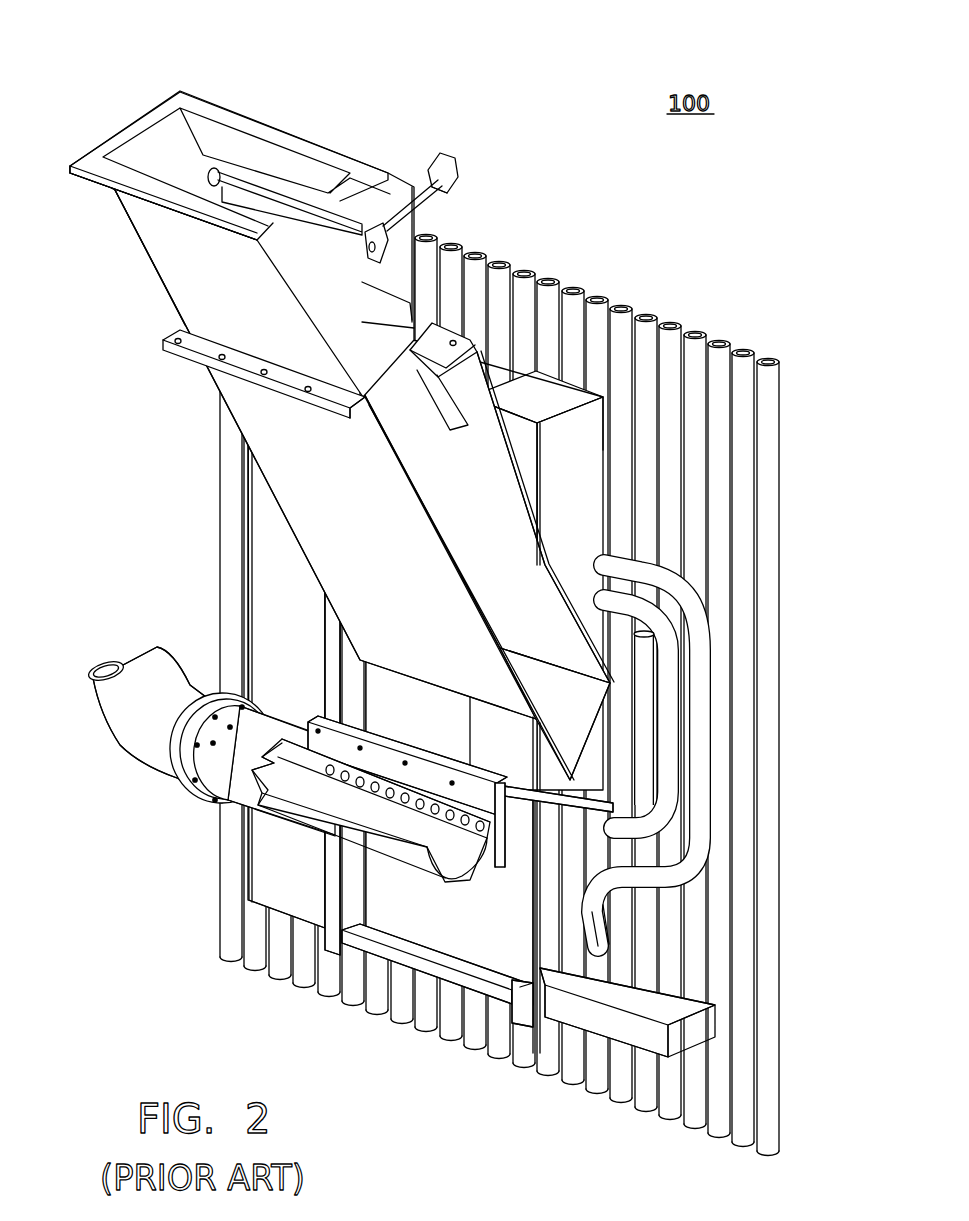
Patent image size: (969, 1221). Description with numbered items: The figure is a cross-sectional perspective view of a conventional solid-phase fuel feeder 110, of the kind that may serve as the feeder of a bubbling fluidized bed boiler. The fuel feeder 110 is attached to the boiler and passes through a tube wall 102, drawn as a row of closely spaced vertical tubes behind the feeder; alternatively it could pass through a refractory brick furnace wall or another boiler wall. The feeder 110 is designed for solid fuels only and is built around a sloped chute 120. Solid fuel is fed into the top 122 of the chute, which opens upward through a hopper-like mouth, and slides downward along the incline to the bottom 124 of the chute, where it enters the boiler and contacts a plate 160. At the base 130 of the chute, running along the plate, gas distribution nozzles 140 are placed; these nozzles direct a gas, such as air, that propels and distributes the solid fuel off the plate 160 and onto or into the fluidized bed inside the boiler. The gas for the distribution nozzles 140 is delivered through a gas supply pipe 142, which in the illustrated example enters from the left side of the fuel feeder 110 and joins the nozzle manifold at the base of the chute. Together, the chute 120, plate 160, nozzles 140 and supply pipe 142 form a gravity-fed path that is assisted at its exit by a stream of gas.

The tube wall 102 is at (768, 517).
The solid-phase fuel feeder 110 is at (105, 114).
The sloped chute 120 is at (275, 442).
The top of the chute 122 is at (173, 212).
The bottom of the chute 124 is at (413, 645).
The base of the chute 130 is at (598, 800).
The gas distribution nozzles 140 is at (533, 813).
The gas supply pipe 142 is at (240, 765).
The plate 160 is at (603, 805).